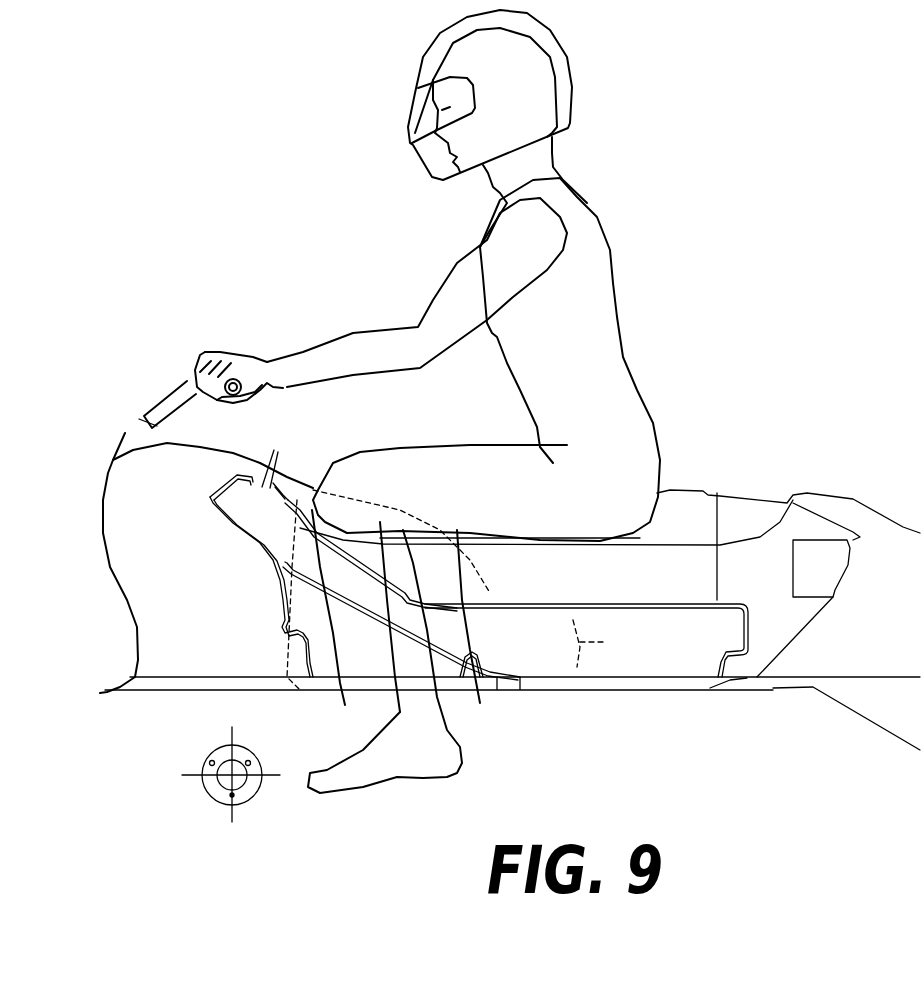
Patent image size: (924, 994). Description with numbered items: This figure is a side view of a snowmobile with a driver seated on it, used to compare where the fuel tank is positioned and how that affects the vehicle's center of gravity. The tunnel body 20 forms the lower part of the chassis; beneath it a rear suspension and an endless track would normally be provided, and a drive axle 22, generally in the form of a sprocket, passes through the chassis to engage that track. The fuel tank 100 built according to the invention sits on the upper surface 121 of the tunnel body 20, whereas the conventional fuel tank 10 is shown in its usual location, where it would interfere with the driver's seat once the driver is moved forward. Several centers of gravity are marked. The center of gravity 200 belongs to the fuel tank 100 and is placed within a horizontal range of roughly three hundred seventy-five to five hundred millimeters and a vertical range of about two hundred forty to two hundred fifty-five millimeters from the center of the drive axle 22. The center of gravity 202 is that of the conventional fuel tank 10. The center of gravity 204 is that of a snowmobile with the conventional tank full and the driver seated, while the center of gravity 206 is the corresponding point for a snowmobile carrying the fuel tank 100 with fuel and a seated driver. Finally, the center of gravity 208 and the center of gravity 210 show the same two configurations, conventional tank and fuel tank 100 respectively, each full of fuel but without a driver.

The conventional fuel tank 10 is at (490, 587).
The tunnel body 20 is at (602, 745).
The drive axle 22 is at (227, 780).
The fuel tank 100 is at (687, 657).
The upper surface 121 is at (730, 678).
The center of gravity 200 is at (473, 631).
The center of gravity 202 is at (413, 617).
The center of gravity 204 is at (332, 655).
The center of gravity 206 is at (307, 655).
The center of gravity 208 is at (278, 722).
The center of gravity 210 is at (248, 712).